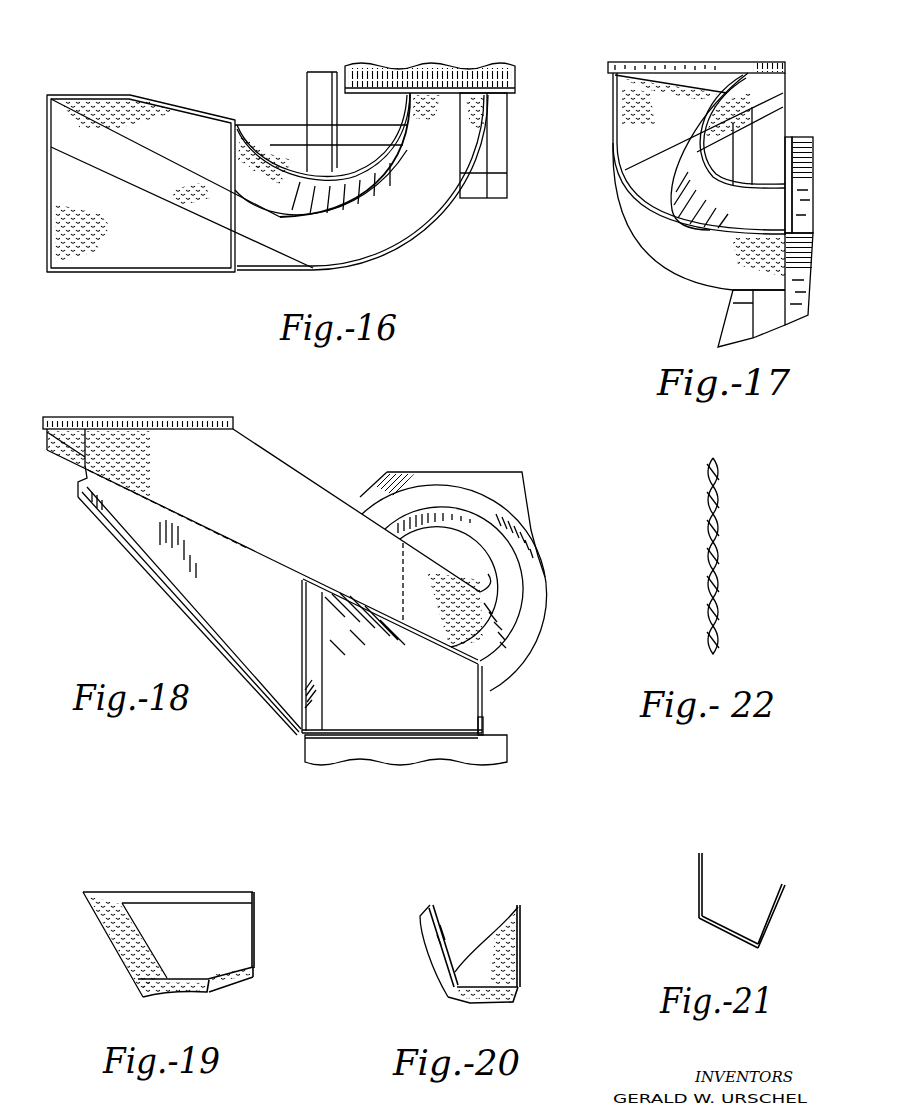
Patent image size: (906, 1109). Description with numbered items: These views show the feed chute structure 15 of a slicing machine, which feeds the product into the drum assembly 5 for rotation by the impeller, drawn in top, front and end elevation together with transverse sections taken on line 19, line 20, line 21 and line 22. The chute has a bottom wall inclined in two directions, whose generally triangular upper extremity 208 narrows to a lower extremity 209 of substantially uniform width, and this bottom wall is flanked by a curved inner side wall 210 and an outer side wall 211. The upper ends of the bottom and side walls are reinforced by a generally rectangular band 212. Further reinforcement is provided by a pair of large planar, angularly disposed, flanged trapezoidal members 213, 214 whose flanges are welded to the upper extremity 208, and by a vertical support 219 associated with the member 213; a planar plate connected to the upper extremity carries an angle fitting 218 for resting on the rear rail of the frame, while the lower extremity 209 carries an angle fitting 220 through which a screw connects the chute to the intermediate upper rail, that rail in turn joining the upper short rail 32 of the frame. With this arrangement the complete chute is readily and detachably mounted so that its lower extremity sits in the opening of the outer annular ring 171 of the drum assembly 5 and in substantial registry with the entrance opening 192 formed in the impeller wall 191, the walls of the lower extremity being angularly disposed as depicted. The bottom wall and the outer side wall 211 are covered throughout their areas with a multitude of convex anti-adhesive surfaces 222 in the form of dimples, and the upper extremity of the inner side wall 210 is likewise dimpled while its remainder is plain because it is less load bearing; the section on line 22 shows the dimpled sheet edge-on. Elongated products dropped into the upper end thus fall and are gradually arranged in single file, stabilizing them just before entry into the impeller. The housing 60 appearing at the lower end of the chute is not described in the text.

In FIG. 16, the feed chute structure 15 is at (110, 87).
In FIG. 17, the feed chute structure 15 is at (706, 55).
In FIG. 18, the feed chute structure 15 is at (175, 412).
In FIG. 16, the section line 19— 19 is at (170, 94).
In FIG. 18, the section line 20— 20 is at (290, 587).
In FIG. 17, the section line 21— 21 is at (767, 181).
In FIG. 18, the section line 22— 22 is at (253, 513).
In FIG. 16, the upper short rail 32 is at (502, 166).
In FIG. 17, the drum assembly 5 is at (811, 133).
In FIG. 18, the drum housing 60 is at (537, 615).
In FIG. 17, the outer annular ring 171 is at (788, 137).
In FIG. 18, the opposite wall 191 is at (507, 628).
In FIG. 18, the opening 192 is at (478, 546).
In FIG. 16, the upper extremity of the bottom wall 208 is at (146, 180).
In FIG. 17, the upper extremity of the bottom wall 208 is at (670, 137).
In FIG. 19, the upper extremity of the bottom wall 208 is at (240, 982).
In FIG. 16, the lower extremity of the bottom wall 209 is at (447, 137).
In FIG. 20, the lower extremity of the bottom wall 209 is at (513, 995).
In FIG. 21, the lower extremity of the bottom wall 209 is at (718, 930).
In FIG. 16, the curved inner side wall 210 is at (348, 178).
In FIG. 17, the curved inner side wall 210 is at (728, 154).
In FIG. 19, the curved inner side wall 210 is at (125, 960).
In FIG. 20, the curved inner side wall 210 is at (428, 935).
In FIG. 21, the curved inner side wall 210 is at (698, 880).
In FIG. 16, the outer side wall 211 is at (387, 252).
In FIG. 17, the outer side wall 211 is at (650, 250).
In FIG. 18, the outer side wall 211 is at (490, 600).
In FIG. 19, the outer side wall 211 is at (257, 938).
In FIG. 20, the outer side wall 211 is at (522, 947).
In FIG. 21, the outer side wall 211 is at (778, 918).
In FIG. 16, the rectangular band 212 is at (114, 277).
In FIG. 17, the rectangular band 212 is at (787, 62).
In FIG. 18, the rectangular band 212 is at (150, 420).
In FIG. 19, the rectangular band 212 is at (258, 898).
In FIG. 18, the flanged trapezoidally shaped member 213 is at (98, 523).
In FIG. 18, the flanged trapezoidally shaped member 214 is at (145, 538).
In FIG. 18, the angle fitting 218 is at (303, 749).
In FIG. 18, the vertical support 219 is at (392, 656).
In FIG. 18, the angle fitting 220 is at (487, 724).
In FIG. 16, the convex anti-adhesive surfaces 222 is at (132, 128).
In FIG. 18, the convex anti-adhesive surfaces 222 is at (85, 432).
In FIG. 22, the convex anti-adhesive surfaces 222 is at (723, 549).